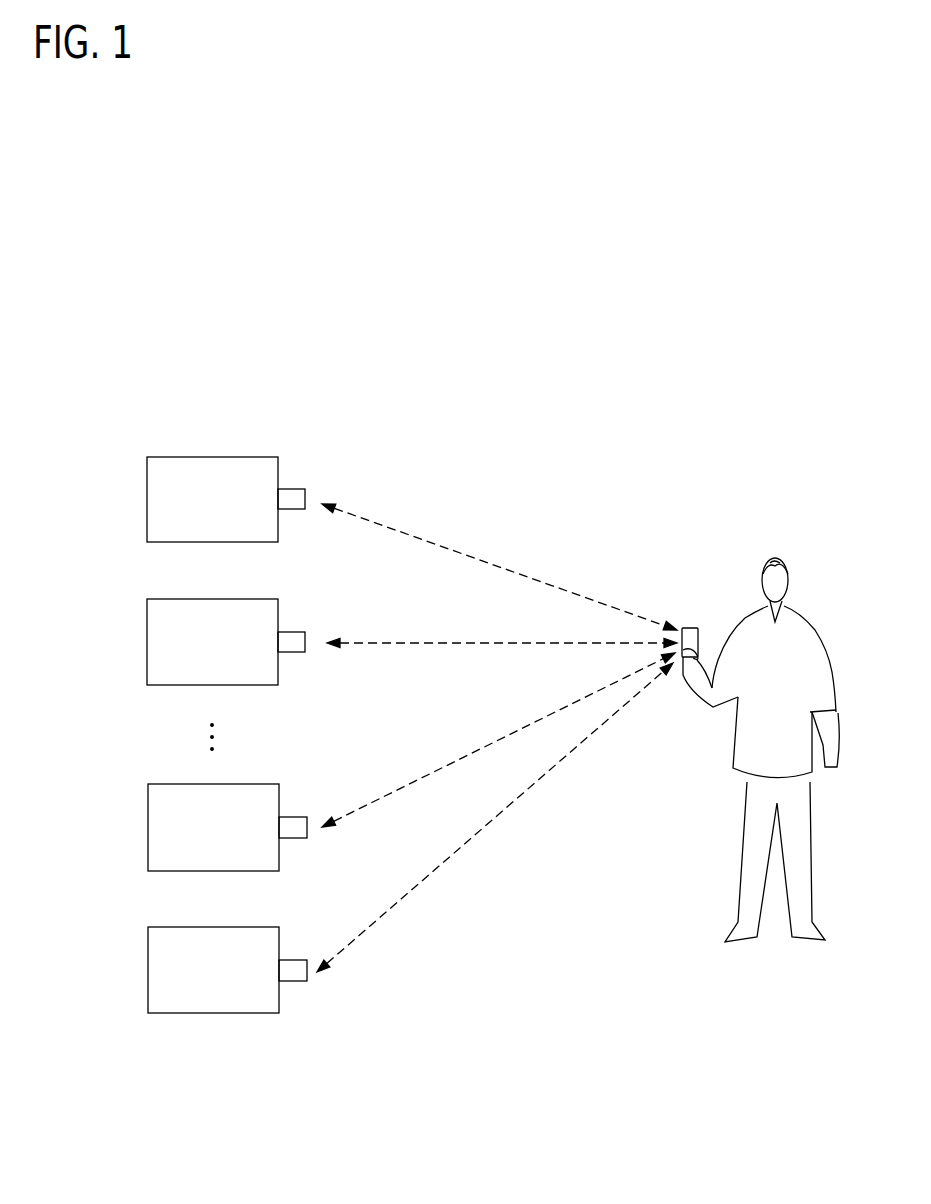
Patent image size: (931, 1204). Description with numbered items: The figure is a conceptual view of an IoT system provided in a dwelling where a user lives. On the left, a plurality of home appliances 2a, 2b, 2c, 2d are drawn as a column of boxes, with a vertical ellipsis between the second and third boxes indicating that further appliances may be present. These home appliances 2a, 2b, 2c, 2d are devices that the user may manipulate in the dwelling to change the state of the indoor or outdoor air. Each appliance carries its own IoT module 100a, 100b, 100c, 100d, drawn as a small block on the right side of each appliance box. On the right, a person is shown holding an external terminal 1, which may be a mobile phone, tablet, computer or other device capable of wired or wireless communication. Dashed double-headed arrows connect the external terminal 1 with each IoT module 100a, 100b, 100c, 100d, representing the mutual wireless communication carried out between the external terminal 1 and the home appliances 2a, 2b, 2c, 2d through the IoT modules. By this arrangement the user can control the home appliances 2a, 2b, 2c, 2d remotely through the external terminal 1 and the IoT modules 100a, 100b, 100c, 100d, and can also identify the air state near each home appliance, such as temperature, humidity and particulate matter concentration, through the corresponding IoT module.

The external terminal 1 is at (690, 627).
The home appliance 2a is at (147, 496).
The home appliance 2b is at (147, 638).
The home appliance 2c is at (148, 826).
The home appliance 2d is at (148, 968).
The IoT module 100a is at (293, 488).
The IoT module 100b is at (293, 631).
The IoT module 100c is at (293, 838).
The IoT module 100d is at (293, 981).